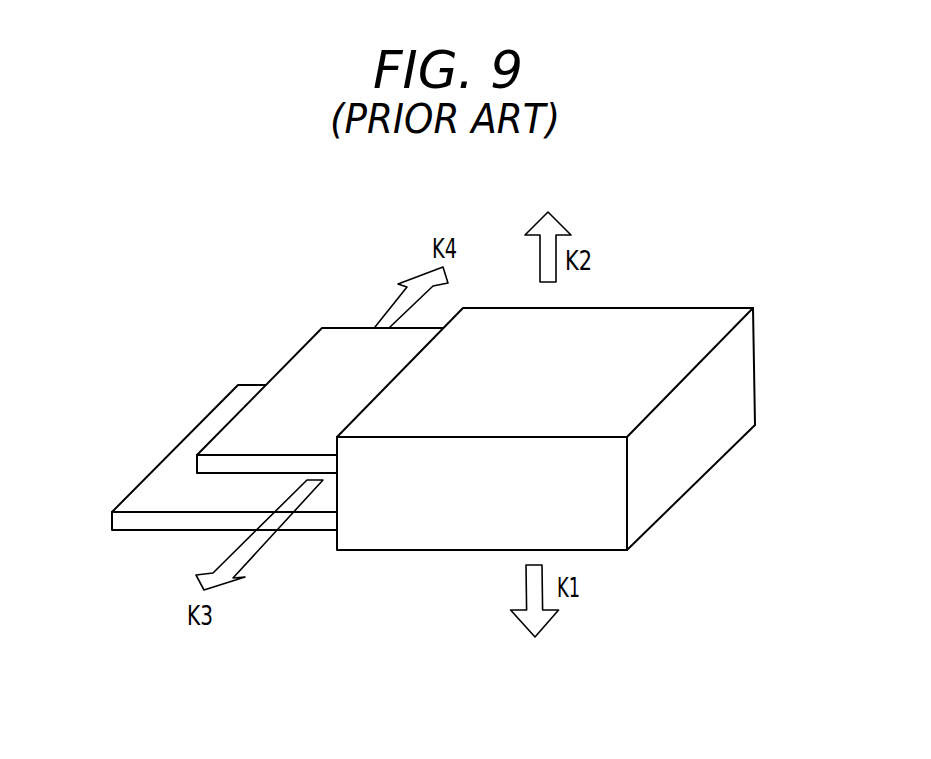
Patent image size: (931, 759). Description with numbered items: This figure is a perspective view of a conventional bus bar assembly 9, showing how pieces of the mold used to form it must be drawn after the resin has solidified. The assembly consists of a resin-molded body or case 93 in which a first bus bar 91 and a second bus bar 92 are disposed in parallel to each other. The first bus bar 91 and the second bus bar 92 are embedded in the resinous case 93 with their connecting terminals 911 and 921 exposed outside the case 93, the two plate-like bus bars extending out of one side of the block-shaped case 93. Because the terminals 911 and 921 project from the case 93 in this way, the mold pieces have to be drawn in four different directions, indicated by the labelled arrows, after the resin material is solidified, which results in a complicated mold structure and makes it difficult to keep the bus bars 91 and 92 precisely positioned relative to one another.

The bus bar assembly 9 is at (385, 595).
The first bus bar 91 is at (163, 522).
The connecting terminal 911 is at (163, 480).
The second bus bar 92 is at (345, 343).
The connecting terminal 921 is at (297, 368).
The resin-molded case 93 is at (657, 338).